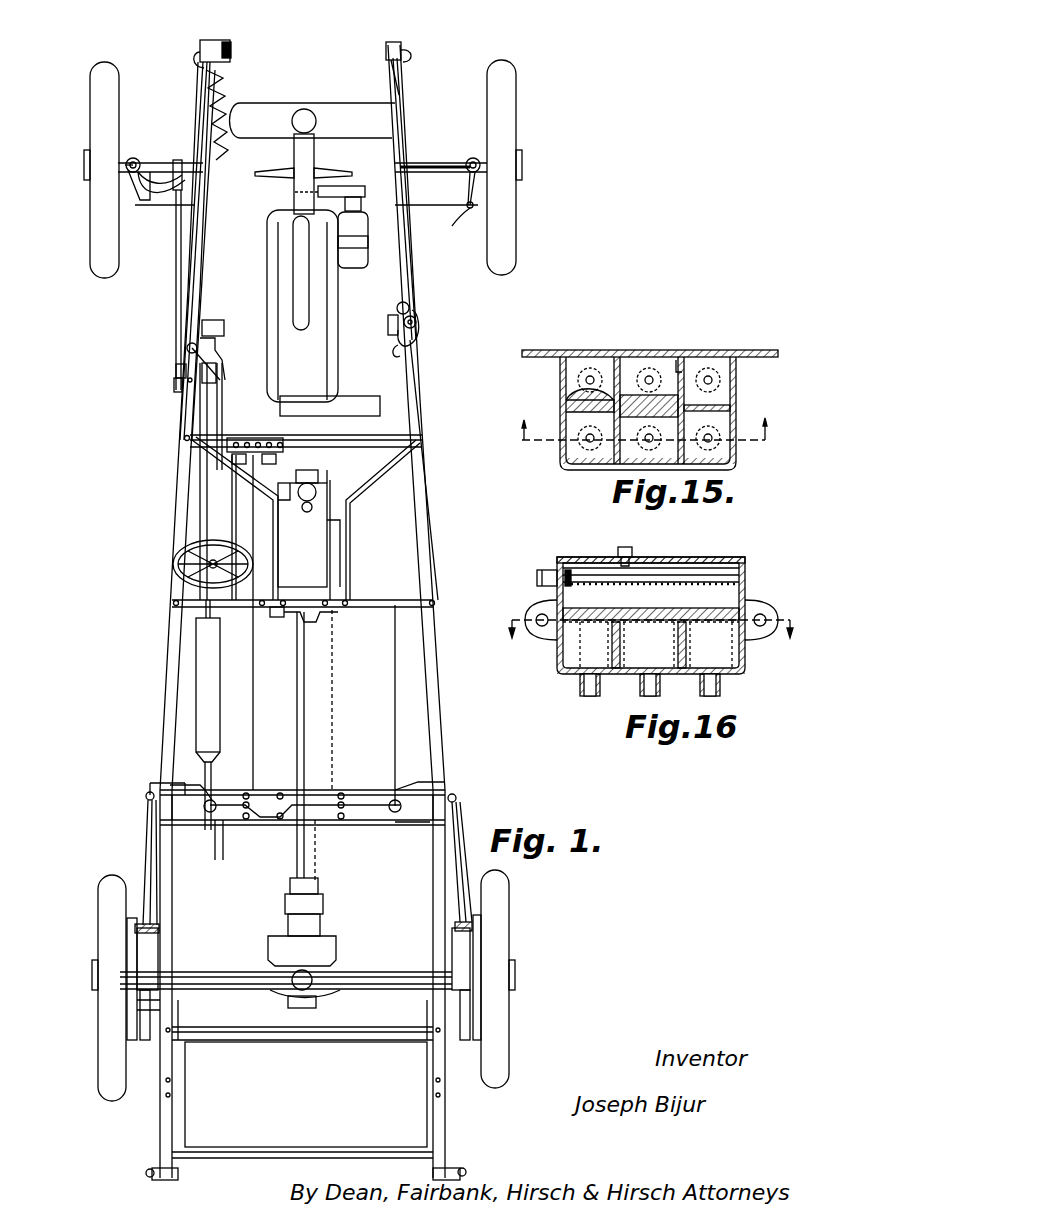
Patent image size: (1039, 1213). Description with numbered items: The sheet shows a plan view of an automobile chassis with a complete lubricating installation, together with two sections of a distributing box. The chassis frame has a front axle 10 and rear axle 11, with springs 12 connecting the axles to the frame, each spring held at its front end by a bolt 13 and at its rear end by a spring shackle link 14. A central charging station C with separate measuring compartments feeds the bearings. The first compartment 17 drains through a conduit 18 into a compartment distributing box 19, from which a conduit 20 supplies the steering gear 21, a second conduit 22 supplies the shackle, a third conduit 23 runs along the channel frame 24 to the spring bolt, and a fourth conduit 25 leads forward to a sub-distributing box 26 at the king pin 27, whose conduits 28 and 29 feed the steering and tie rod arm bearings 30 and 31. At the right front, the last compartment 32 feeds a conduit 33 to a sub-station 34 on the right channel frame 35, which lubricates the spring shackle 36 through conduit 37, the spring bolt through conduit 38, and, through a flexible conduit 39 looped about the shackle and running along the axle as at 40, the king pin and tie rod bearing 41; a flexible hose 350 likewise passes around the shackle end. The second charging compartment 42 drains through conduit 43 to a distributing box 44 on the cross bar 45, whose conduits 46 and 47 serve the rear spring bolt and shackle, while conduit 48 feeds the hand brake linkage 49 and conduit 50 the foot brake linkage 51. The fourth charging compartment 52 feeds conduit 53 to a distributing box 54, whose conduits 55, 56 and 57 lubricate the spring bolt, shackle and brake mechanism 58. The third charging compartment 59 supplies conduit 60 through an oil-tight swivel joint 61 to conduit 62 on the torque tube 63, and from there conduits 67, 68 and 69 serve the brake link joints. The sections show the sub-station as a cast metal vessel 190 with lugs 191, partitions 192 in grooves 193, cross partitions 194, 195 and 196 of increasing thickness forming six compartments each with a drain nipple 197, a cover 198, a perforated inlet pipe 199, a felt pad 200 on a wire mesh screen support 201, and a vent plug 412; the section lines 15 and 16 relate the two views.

In FIG. 1, the front axle 10 is at (416, 158).
In FIG. 1, the rear axle 11 is at (392, 990).
In FIG. 1, the springs 12 is at (218, 239).
In FIG. 1, the bolt 13 is at (212, 44).
In FIG. 1, the spring shackle link 14 is at (146, 1176).
In FIG. 16, the section line 15— 15 is at (646, 622).
In FIG. 15, the section line 16— 16 is at (639, 441).
In FIG. 1, the first compartment 17 is at (226, 446).
In FIG. 1, the conduit 18 is at (262, 345).
In FIG. 1, the compartment distributing box 19 is at (186, 349).
In FIG. 1, the conduit 20 is at (176, 370).
In FIG. 1, the steering gear 21 is at (176, 392).
In FIG. 1, the second conduit 22 is at (212, 358).
In FIG. 1, the third conduit 23 is at (192, 248).
In FIG. 1, the channel frame 24 is at (200, 298).
In FIG. 1, the fourth conduit 25 is at (206, 213).
In FIG. 1, the sub-distributing box 26 is at (137, 160).
In FIG. 1, the king pin 27 is at (185, 130).
In FIG. 1, the conduit 28 is at (152, 170).
In FIG. 1, the conduit 29 is at (130, 182).
In FIG. 1, the steering arm bearing 30 is at (206, 135).
In FIG. 1, the tie rod arm bearing 31 is at (135, 205).
In FIG. 1, the last compartment 32 is at (280, 438).
In FIG. 1, the conduit 33 is at (424, 384).
In FIG. 1, the sub-station 34 is at (410, 306).
In FIG. 1, the right channel frame 35 is at (412, 264).
In FIG. 1, the spring shackle 36 is at (422, 328).
In FIG. 1, the conduit 37 is at (418, 320).
In FIG. 1, the conduit 38 is at (395, 102).
In FIG. 1, the flexible conduit 39 is at (396, 230).
In FIG. 1, the conduit portion along axle 40 is at (448, 160).
In FIG. 1, the tie rod bearing 41 is at (478, 214).
In FIG. 1, the second charging compartment 42 is at (250, 438).
In FIG. 1, the conduit 43 is at (243, 706).
In FIG. 1, the distributing box 44 is at (228, 850).
In FIG. 1, the cross bar 45 is at (290, 818).
In FIG. 1, the conduit 46 is at (160, 790).
In FIG. 1, the conduit 47 is at (176, 906).
In FIG. 1, the third conduit 48 is at (250, 790).
In FIG. 1, the hand brake linkage 49 is at (258, 798).
In FIG. 1, the fourth conduit 50 is at (256, 820).
In FIG. 1, the foot brake linkage 51 is at (300, 790).
In FIG. 1, the fourth charging compartment 52 is at (282, 438).
In FIG. 1, the conduit 53 is at (398, 690).
In FIG. 1, the distributing box 54 is at (417, 802).
In FIG. 1, the conduit 55 is at (420, 788).
In FIG. 1, the conduit 56 is at (430, 1010).
In FIG. 1, the conduit 57 is at (372, 822).
In FIG. 1, the brake mechanism 58 is at (345, 792).
In FIG. 1, the third charging compartment 59 is at (268, 438).
In FIG. 1, the conduit 60 is at (260, 496).
In FIG. 1, the oil-tight swivel joint 61 is at (275, 612).
In FIG. 1, the conduit 62 is at (306, 697).
In FIG. 1, the torque tube 63 is at (305, 860).
In FIG. 1, the conduit 67 is at (160, 952).
In FIG. 1, the conduit 68 is at (160, 1008).
In FIG. 1, the conduit 69 is at (130, 956).
In FIG. 1, the central charging station C is at (238, 438).
In FIG. 15, the cast metal vessel 190 is at (650, 410).
In FIG. 16, the cast metal vessel 190 is at (742, 588).
In FIG. 16, the lugs 191 is at (756, 640).
In FIG. 15, the partitions 192 is at (622, 360).
In FIG. 15, the grooves 193 is at (682, 357).
In FIG. 15, the thin cross partition 194 is at (720, 408).
In FIG. 15, the intermediate cross partition 195 is at (640, 420).
In FIG. 15, the thick cross partition 196 is at (580, 357).
In FIG. 15, the drain nipple 197 is at (590, 438).
In FIG. 16, the drain nipple 197 is at (586, 696).
In FIG. 16, the cover 198 is at (700, 557).
In FIG. 16, the perforated inlet pipe 199 is at (632, 570).
In FIG. 16, the pad 200 is at (672, 615).
In FIG. 16, the wire mesh screen support 201 is at (580, 622).
In FIG. 1, the flexible hose 350 is at (408, 356).
In FIG. 16, the vent plug 412 is at (624, 547).